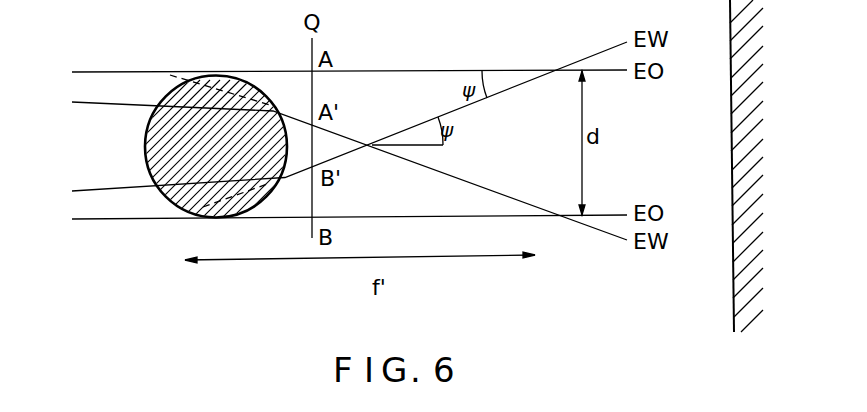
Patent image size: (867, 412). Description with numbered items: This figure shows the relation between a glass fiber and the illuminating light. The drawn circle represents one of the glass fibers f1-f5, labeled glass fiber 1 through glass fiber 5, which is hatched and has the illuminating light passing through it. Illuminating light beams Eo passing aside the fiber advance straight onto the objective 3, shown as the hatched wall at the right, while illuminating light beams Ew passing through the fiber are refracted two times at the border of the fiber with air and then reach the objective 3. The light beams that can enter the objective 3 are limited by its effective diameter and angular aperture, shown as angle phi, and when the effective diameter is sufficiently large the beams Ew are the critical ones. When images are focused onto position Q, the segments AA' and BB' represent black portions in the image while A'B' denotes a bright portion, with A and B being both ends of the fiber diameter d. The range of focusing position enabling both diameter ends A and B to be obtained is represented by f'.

The glass fiber f1 1 is at (147, 150).
The glass fiber f5 5 is at (235, 147).
The objective 3 is at (732, 301).